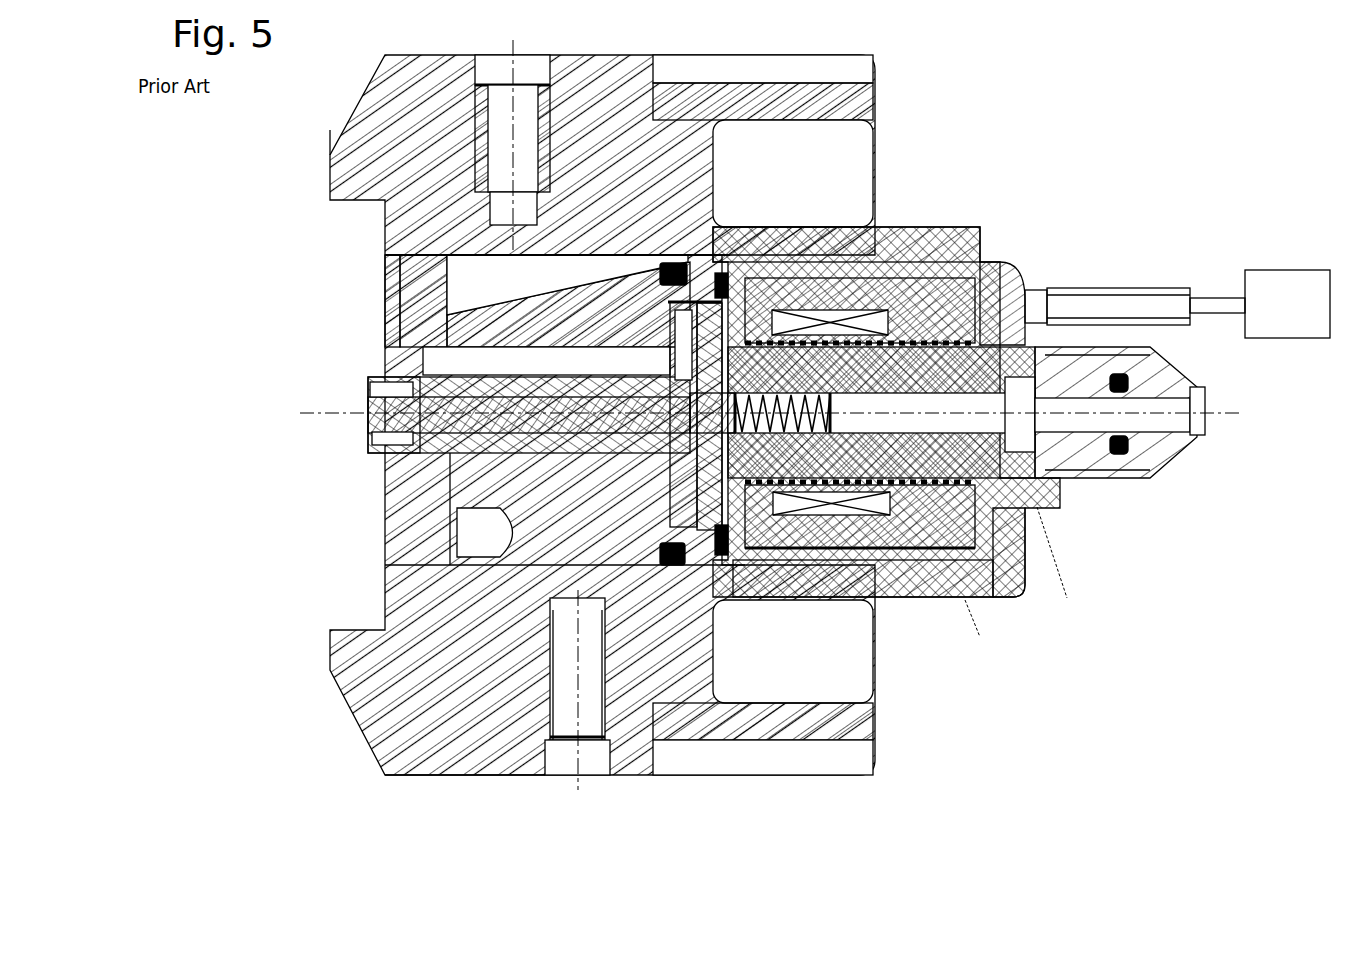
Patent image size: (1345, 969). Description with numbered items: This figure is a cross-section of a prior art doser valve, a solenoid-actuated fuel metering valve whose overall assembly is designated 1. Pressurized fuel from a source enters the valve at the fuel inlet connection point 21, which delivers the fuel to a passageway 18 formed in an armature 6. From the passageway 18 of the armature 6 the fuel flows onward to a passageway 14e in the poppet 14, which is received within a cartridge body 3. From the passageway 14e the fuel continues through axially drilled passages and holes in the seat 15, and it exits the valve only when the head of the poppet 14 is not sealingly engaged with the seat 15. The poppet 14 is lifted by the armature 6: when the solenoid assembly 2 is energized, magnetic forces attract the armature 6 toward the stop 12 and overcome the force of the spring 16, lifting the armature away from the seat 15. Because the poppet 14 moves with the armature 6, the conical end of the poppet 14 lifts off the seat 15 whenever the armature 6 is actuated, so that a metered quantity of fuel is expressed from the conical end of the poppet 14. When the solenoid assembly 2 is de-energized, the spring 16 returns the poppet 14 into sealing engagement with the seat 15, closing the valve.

The housing 1 is at (855, 97).
The solenoid assembly 2 is at (890, 242).
The cartridge body 3 is at (487, 748).
The armature 6 is at (707, 502).
The stop 12 is at (1013, 460).
The poppet 14 is at (467, 420).
The passageway 14e is at (678, 418).
The seat 15 is at (372, 437).
The spring 16 is at (850, 572).
The passageway 18 is at (1088, 422).
The fuel inlet connection point 21 is at (1187, 468).